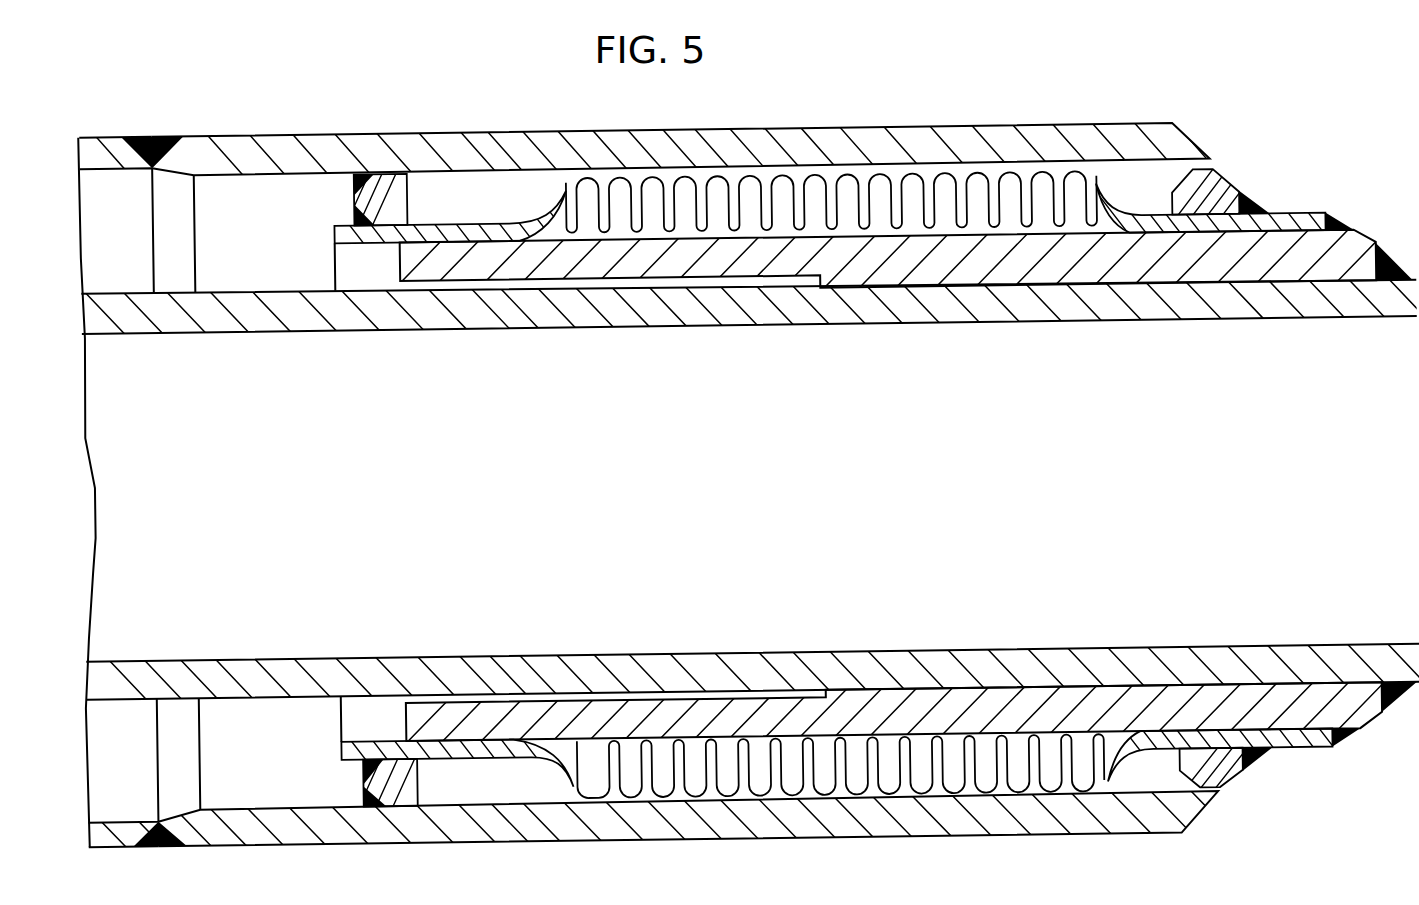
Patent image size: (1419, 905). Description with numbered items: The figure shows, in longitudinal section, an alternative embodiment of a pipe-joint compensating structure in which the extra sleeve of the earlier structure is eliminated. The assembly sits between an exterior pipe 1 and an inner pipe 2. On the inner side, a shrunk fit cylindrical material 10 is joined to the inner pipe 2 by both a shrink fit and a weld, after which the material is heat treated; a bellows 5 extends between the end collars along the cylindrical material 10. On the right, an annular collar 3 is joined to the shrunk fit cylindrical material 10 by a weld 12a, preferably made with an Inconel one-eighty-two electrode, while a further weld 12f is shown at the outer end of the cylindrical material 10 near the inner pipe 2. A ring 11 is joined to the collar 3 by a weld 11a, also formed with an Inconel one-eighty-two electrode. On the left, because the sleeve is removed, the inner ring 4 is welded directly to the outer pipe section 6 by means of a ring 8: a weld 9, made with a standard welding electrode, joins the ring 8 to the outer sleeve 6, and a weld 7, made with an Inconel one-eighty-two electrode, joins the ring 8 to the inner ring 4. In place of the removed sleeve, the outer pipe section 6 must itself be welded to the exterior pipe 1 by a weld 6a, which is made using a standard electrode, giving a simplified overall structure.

The exterior pipe 1 is at (123, 142).
The inner pipe 2 is at (1349, 317).
The collar 3 is at (1286, 226).
The ring 4 is at (494, 220).
The bellows 5 is at (862, 185).
The outer pipe section 6 is at (792, 138).
The weld 6a is at (160, 131).
The weld 7 is at (357, 209).
The ring 8 is at (394, 172).
The weld 9 is at (357, 178).
The shrunk fit cylindrical material 10 is at (1368, 252).
The ring 11 is at (1222, 175).
The weld 11a is at (1256, 209).
The weld 12a is at (1341, 220).
The weld 12f is at (1398, 272).